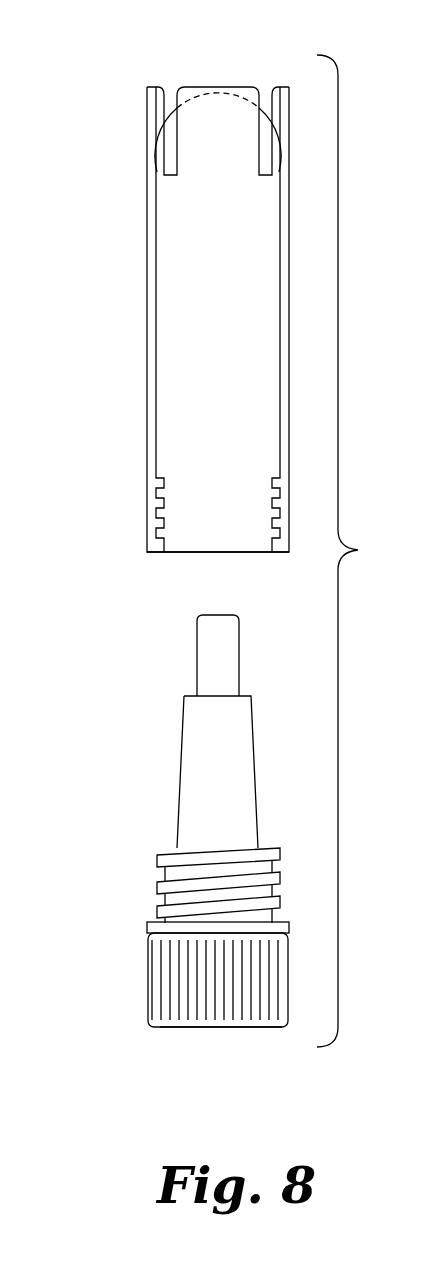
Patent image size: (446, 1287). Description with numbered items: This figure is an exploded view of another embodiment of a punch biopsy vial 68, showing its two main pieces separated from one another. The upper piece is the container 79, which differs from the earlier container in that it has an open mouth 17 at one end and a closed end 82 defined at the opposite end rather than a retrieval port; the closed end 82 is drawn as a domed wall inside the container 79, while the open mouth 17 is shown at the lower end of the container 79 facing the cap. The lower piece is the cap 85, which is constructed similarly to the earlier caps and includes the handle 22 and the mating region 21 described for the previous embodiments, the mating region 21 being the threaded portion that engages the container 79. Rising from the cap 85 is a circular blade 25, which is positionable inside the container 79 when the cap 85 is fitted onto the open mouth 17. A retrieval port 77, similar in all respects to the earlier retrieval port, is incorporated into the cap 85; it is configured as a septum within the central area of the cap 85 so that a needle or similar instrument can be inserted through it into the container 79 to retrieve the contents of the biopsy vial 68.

The biopsy vial 68 is at (358, 550).
The container 79 is at (147, 268).
The closed end 82 is at (219, 94).
The open mouth 17 is at (202, 552).
The circular blade 25 is at (197, 657).
The mating region 21 is at (157, 883).
The cap 85 is at (147, 972).
The handle 22 is at (198, 1027).
The retrieval port 77 is at (242, 1027).